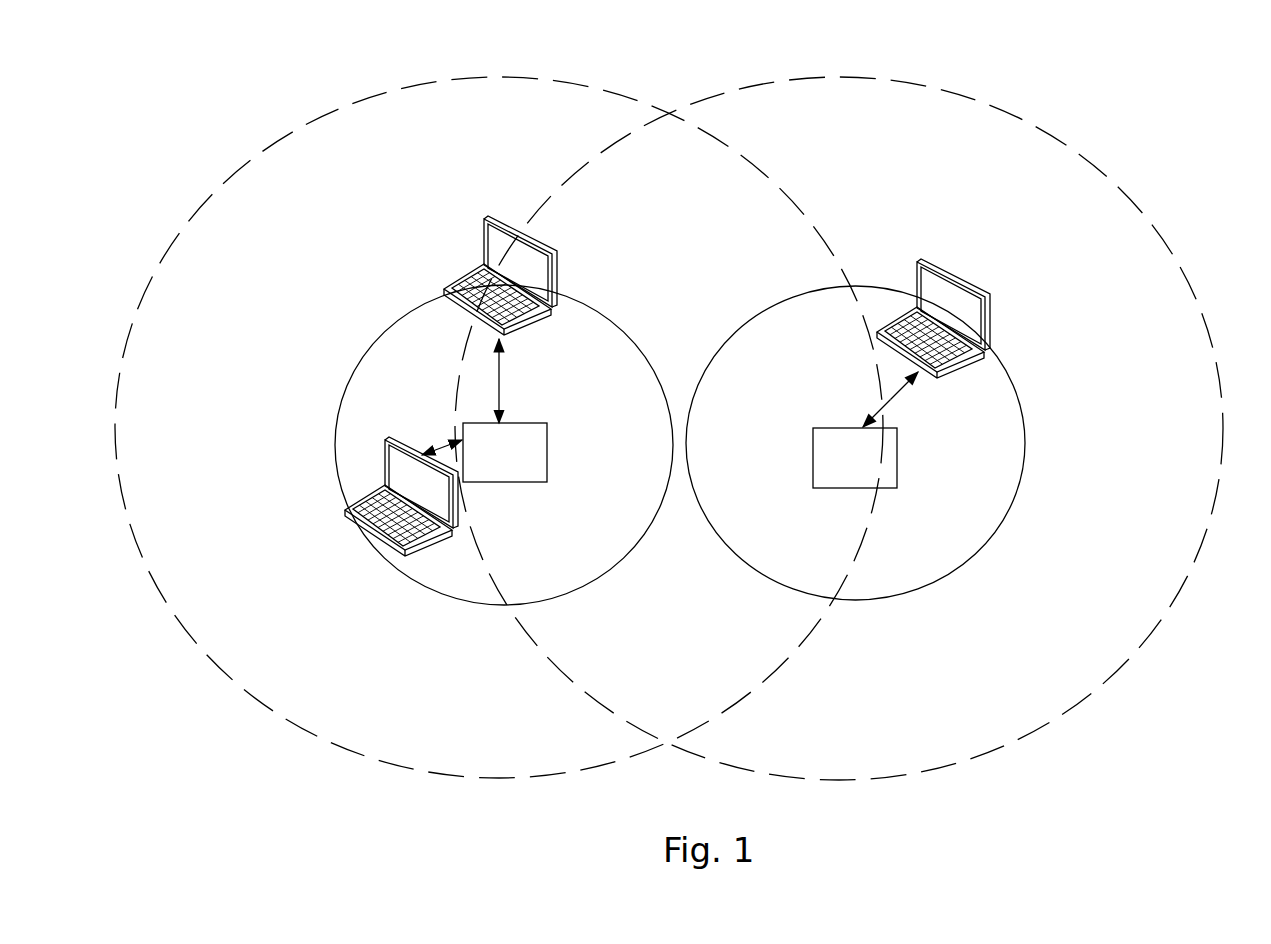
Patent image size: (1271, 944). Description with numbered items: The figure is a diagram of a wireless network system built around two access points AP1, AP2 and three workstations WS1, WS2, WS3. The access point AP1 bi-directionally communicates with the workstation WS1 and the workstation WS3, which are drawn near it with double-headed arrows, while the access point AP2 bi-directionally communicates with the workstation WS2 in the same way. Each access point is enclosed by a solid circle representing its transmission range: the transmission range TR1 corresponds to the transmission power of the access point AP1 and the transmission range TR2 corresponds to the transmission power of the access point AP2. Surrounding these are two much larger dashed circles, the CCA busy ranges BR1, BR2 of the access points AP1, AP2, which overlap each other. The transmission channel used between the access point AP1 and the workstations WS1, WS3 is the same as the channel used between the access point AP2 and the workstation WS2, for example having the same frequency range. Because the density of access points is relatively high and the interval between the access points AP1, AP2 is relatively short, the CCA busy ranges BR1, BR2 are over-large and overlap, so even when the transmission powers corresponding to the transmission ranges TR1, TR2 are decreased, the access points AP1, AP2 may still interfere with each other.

The CCA busy range BR1 is at (292, 123).
The CCA busy range BR2 is at (1092, 156).
The transmission range TR1 is at (338, 413).
The transmission range TR2 is at (1025, 435).
The access point AP1 is at (484, 429).
The access point AP2 is at (865, 444).
The workstation WS1 is at (477, 275).
The workstation WS2 is at (933, 300).
The workstation WS3 is at (381, 498).